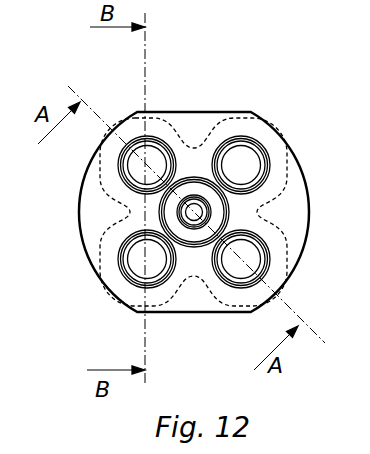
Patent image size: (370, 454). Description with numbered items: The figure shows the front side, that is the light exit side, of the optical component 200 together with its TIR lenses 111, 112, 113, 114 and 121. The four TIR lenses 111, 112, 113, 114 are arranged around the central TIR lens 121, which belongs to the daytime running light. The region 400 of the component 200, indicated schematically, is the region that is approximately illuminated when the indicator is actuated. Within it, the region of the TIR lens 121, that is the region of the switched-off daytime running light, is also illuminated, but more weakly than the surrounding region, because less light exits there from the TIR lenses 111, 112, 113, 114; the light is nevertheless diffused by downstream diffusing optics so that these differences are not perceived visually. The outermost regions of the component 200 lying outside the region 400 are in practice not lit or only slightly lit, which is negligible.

The optical component 200 is at (218, 113).
The region 400 is at (183, 140).
The TIR lens 121 is at (205, 205).
The TIR lens 111 is at (150, 137).
The TIR lens 112 is at (243, 160).
The TIR lens 113 is at (252, 252).
The TIR lens 114 is at (135, 258).